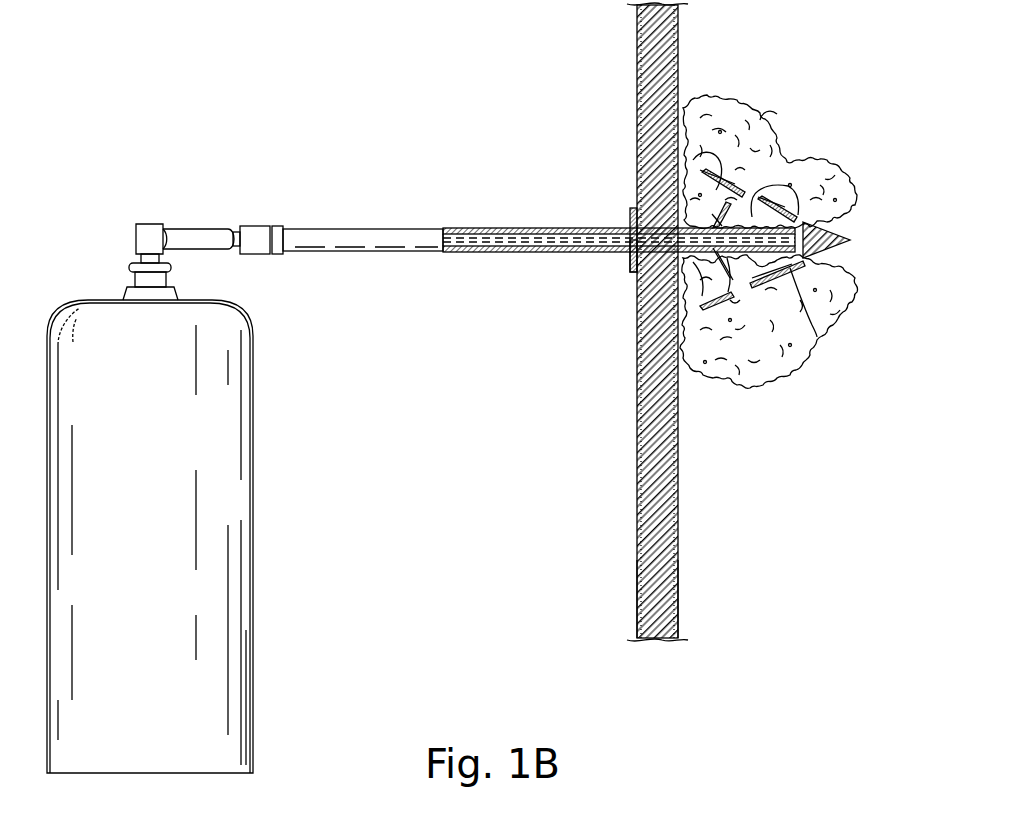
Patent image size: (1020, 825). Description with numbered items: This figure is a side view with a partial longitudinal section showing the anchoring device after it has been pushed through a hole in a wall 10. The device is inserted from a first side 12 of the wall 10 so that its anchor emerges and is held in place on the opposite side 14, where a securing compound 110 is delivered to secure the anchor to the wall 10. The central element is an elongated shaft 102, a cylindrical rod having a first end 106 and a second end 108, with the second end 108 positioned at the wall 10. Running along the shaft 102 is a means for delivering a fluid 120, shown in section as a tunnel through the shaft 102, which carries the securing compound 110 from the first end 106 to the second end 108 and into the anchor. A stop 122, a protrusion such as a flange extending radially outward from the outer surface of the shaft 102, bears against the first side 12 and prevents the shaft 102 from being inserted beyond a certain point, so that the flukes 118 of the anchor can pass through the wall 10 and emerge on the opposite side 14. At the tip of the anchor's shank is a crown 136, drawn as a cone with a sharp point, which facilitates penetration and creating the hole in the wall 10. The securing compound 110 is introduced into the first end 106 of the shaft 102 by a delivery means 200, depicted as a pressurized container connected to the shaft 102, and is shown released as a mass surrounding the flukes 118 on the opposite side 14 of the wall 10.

The wall 10 is at (655, 640).
The first side 12 is at (622, 608).
The opposite side 14 is at (692, 601).
The elongated shaft 102 is at (372, 228).
The first end 106 is at (261, 207).
The second end 108 is at (618, 216).
The securing compound 110 is at (753, 110).
The flukes 118 is at (817, 337).
The means for delivering a fluid 120 is at (477, 252).
The stop 122 is at (630, 264).
The crown 136 is at (848, 240).
The delivery means 200 is at (253, 548).